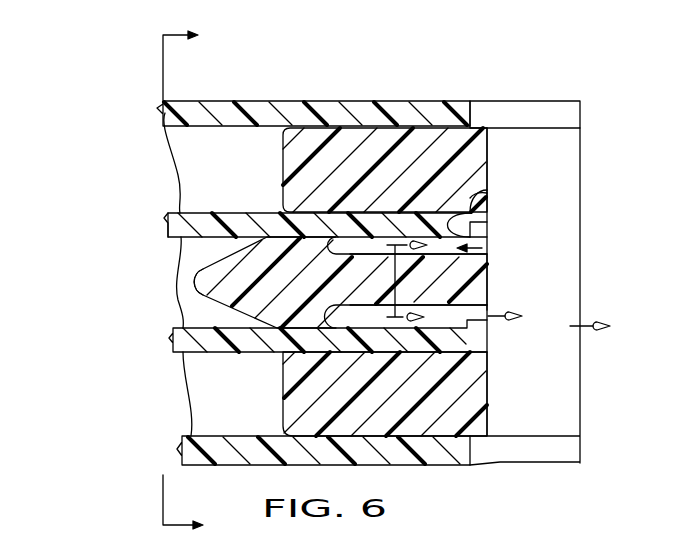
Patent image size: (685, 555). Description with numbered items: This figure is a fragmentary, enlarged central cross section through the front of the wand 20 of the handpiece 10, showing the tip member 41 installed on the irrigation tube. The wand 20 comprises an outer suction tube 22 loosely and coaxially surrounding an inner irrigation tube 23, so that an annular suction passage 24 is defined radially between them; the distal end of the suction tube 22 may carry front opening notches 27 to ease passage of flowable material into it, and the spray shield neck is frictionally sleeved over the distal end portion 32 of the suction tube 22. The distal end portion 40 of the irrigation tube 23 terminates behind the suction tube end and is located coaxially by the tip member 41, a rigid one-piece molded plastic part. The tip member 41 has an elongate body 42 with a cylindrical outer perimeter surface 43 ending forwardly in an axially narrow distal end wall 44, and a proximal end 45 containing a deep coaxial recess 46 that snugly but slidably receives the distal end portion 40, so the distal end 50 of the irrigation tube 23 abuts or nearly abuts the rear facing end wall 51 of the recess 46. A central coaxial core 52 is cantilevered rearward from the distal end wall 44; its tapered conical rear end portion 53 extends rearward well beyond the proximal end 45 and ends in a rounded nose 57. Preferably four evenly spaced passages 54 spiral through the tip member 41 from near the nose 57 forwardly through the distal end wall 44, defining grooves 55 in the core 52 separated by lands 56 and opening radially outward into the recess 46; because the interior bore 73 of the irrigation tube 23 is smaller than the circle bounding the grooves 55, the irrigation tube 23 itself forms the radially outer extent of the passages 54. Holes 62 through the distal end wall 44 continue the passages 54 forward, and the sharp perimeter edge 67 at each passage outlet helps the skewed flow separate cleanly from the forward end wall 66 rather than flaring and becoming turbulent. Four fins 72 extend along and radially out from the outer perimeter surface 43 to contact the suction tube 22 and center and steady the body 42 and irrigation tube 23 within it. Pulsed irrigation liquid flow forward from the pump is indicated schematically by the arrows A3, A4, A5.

The handpiece 10 is at (183, 277).
The wand 20 is at (258, 78).
The outer suction tube 22 is at (190, 100).
The inner irrigation tube 23 is at (170, 235).
The annular suction passage 24 is at (170, 150).
The front opening notches 27 is at (485, 113).
The distal end portion of suction tube 32 is at (458, 214).
The distal end portion of irrigation tube 40 is at (385, 115).
The tip member 41 is at (548, 404).
The elongate body 42 is at (594, 178).
The outer perimeter surface 43 is at (20, 14).
The distal end wall 44 is at (482, 349).
The proximal end 45 is at (283, 208).
The recess 46 is at (463, 227).
The distal end of irrigation tube 50 is at (475, 215).
The rear facing end wall 51 is at (535, 56).
The core 52 is at (267, 288).
The conical rear end portion 53 is at (190, 259).
The passages 54 is at (490, 252).
The grooves 55 is at (330, 212).
The lands 56 is at (377, 212).
The rounded nose 57 is at (200, 297).
The holes 62 is at (476, 249).
The forward end wall 66 is at (496, 264).
The perimeter edge 67 is at (492, 260).
The fins 72 is at (357, 145).
The interior bore 73 is at (287, 382).
The arrow A3 is at (395, 283).
The arrow A4 is at (503, 316).
The arrows A5 is at (577, 326).